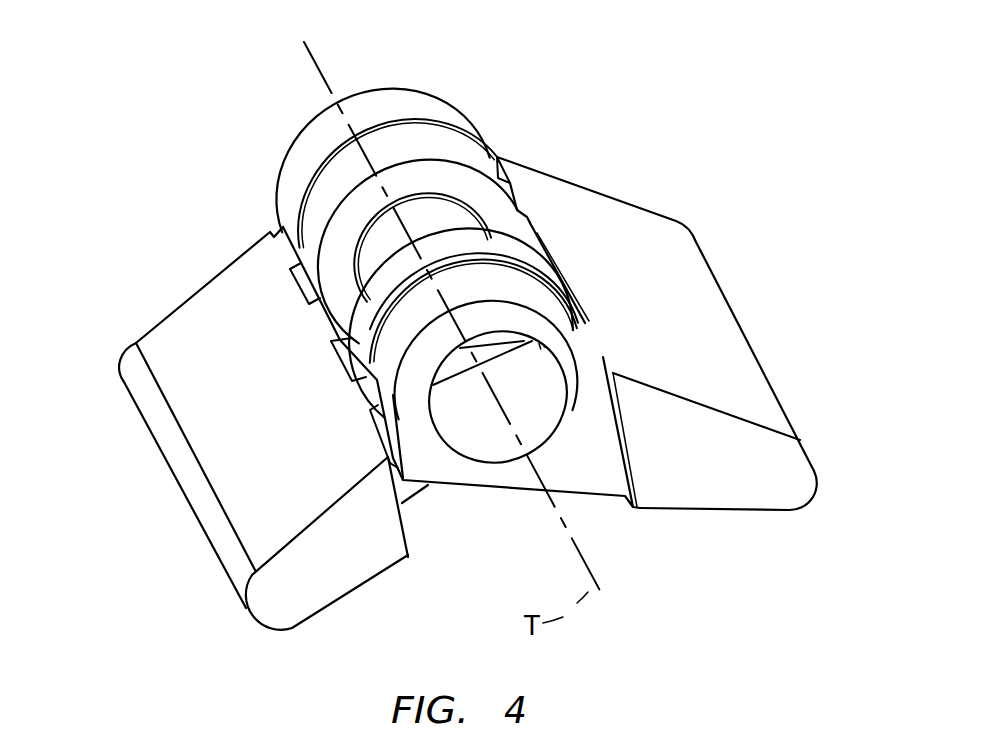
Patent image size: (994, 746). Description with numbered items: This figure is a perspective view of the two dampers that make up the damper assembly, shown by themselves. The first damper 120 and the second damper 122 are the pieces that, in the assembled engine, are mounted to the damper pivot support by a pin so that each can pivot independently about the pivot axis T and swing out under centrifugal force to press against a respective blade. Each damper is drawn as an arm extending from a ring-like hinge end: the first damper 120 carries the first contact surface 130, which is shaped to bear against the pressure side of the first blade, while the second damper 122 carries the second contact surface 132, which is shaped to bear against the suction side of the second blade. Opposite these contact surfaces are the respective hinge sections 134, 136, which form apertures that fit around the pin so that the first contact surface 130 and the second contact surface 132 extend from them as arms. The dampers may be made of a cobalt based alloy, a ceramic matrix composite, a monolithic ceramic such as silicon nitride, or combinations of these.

The first damper 120 is at (172, 334).
The second damper 122 is at (695, 287).
The first contact surface 130 is at (143, 407).
The second contact surface 132 is at (790, 421).
The hinge section 134 is at (352, 200).
The hinge section 136 is at (457, 158).